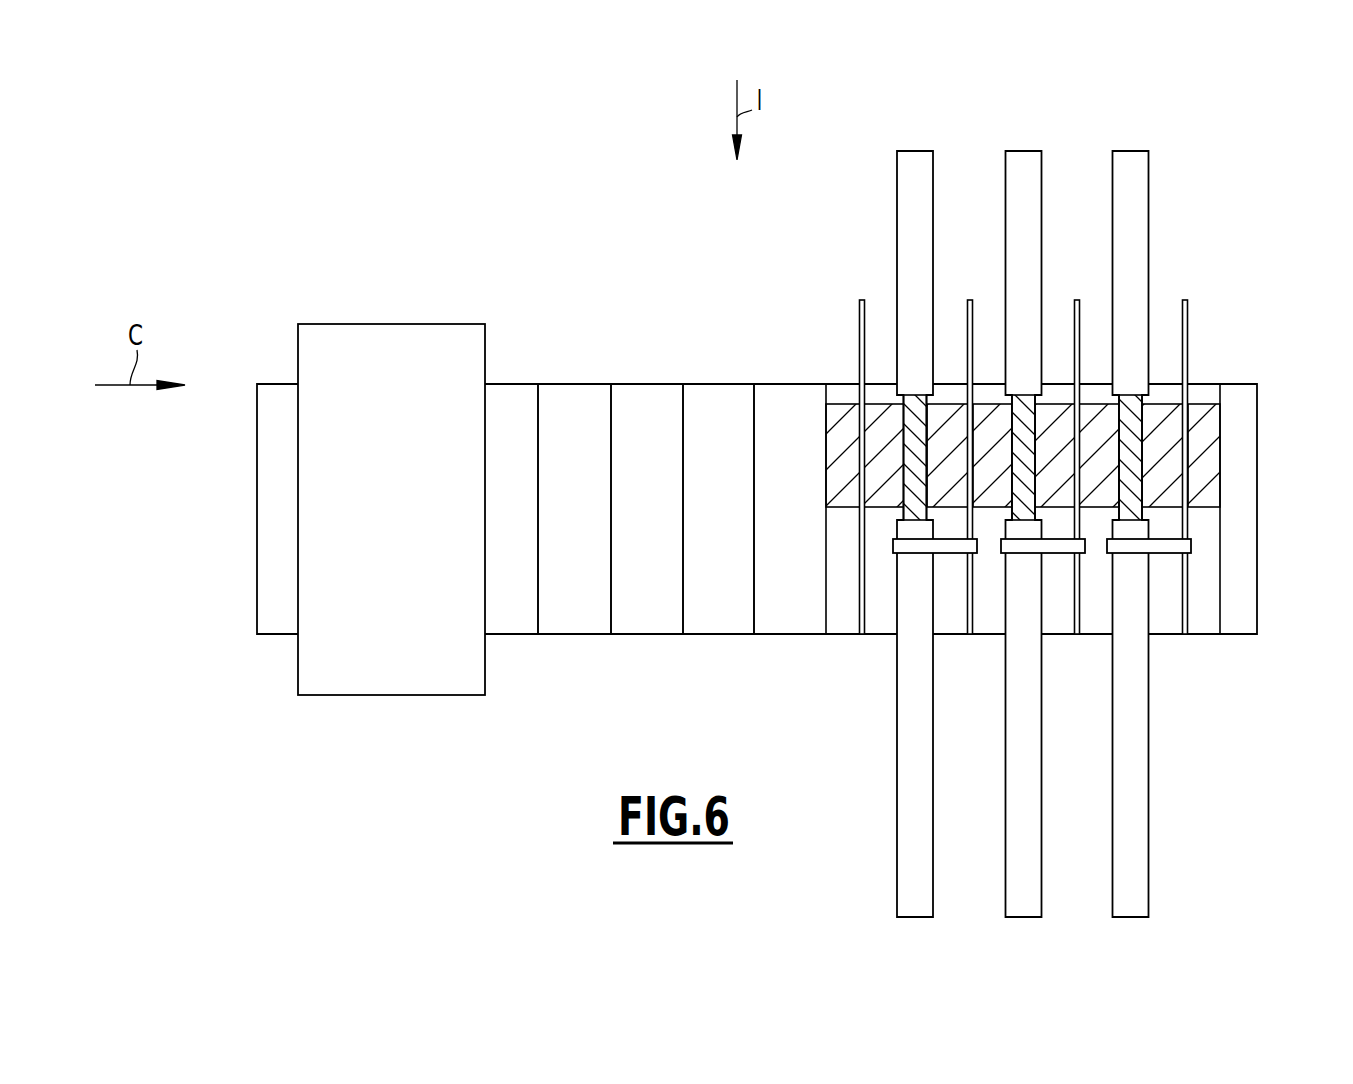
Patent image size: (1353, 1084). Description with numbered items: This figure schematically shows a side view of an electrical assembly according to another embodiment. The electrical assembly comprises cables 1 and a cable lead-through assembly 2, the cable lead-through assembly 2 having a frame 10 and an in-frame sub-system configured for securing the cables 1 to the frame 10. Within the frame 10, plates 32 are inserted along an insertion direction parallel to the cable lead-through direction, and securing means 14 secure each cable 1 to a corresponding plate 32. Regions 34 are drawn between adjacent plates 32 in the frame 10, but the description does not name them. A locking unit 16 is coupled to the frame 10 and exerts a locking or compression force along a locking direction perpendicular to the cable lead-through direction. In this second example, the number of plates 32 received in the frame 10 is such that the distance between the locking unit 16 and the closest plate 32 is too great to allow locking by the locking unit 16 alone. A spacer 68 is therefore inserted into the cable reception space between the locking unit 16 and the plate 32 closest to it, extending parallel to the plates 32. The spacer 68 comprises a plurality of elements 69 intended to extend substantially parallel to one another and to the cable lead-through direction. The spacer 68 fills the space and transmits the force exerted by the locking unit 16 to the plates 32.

The cable 1 is at (917, 167).
The cable lead-through assembly 2 is at (1268, 174).
The frame 10 is at (208, 516).
The securing means 14 is at (915, 547).
The locking unit 16 is at (385, 363).
The plate 32 is at (862, 300).
The hatched section 34 is at (843, 432).
The spacer 68 is at (607, 240).
The elements 69 is at (782, 397).